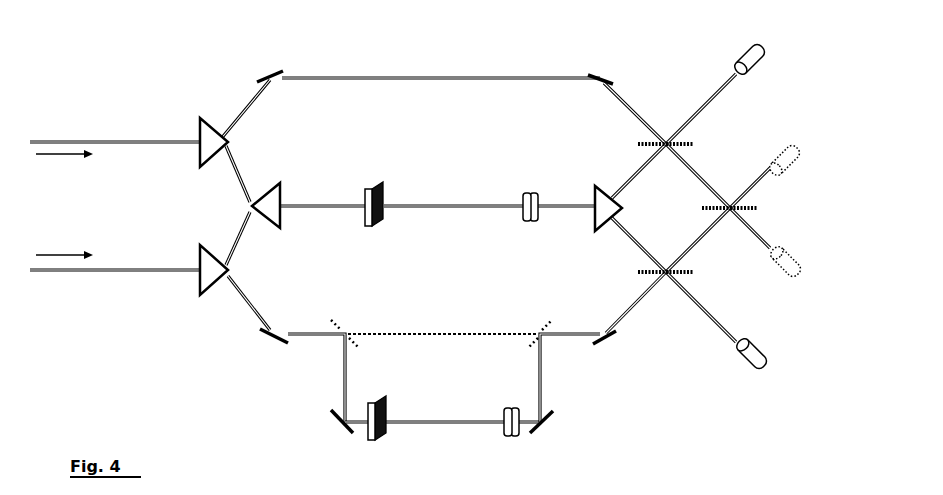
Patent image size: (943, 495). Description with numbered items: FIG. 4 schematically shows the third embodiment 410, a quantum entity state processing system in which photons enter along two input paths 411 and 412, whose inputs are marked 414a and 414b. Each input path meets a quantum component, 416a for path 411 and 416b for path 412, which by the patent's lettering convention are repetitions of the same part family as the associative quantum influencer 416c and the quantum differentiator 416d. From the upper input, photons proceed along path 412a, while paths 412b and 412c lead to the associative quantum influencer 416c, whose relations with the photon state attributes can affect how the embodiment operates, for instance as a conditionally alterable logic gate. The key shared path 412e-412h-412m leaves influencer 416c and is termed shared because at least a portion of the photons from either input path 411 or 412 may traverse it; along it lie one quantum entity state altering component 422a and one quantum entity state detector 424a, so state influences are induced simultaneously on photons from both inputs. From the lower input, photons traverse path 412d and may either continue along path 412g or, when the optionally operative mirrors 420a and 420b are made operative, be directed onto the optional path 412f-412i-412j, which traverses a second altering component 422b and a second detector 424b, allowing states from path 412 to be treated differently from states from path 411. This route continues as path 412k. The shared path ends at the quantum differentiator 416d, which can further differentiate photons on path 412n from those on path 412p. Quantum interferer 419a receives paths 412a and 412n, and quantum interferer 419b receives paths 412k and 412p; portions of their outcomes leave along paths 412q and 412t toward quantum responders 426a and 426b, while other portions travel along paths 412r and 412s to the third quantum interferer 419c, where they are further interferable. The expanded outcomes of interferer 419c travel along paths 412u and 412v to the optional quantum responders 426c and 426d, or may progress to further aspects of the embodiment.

The third embodiment 410 is at (197, 66).
The input path 411 is at (80, 140).
The input path 412 is at (98, 272).
The propagation direction of first beam 414a is at (58, 156).
The propagation direction of second beam 414b is at (50, 253).
The first beam splitter 416a is at (200, 130).
The second beam splitter 416b is at (208, 292).
The associative quantum influencer 416c is at (250, 210).
The quantum differentiator 416d is at (596, 222).
The path 412a is at (457, 78).
The path 412b is at (243, 168).
The path 412c is at (242, 247).
The path 412d is at (250, 312).
The shared path segment 412e is at (316, 204).
The optional path segment 412f is at (343, 358).
The path 412g is at (375, 332).
The shared path segment 412h is at (440, 209).
The optional path segment 412i is at (445, 420).
The optional path segment 412j is at (541, 365).
The path 412k is at (622, 318).
The shared path segment 412m is at (577, 204).
The path 412n is at (630, 178).
The path 412p is at (612, 224).
The beam path segment q 412q is at (680, 132).
The path 412r is at (708, 187).
The path 412s is at (680, 258).
The beam path segment t 412t is at (690, 294).
The path 412u is at (765, 183).
The path 412v is at (742, 222).
The quantum interferer 419a is at (690, 142).
The quantum interferer 419b is at (650, 273).
The quantum interferer 419c is at (710, 207).
The optionally operative mirror 420a is at (344, 328).
The optionally operative mirror 420b is at (540, 328).
The quantum entity state altering component 422a is at (381, 187).
The quantum entity state altering component 422b is at (373, 440).
The quantum entity state detector 424a is at (525, 193).
The quantum entity state detector 424b is at (513, 436).
The first detector 426a is at (735, 62).
The second detector 426b is at (745, 364).
The optional quantum responder 426c is at (795, 150).
The optional quantum responder 426d is at (790, 280).